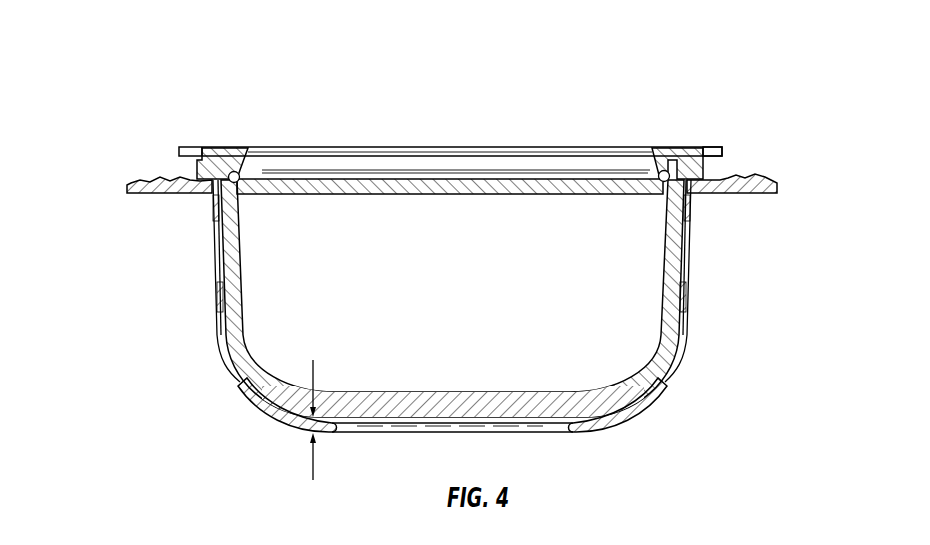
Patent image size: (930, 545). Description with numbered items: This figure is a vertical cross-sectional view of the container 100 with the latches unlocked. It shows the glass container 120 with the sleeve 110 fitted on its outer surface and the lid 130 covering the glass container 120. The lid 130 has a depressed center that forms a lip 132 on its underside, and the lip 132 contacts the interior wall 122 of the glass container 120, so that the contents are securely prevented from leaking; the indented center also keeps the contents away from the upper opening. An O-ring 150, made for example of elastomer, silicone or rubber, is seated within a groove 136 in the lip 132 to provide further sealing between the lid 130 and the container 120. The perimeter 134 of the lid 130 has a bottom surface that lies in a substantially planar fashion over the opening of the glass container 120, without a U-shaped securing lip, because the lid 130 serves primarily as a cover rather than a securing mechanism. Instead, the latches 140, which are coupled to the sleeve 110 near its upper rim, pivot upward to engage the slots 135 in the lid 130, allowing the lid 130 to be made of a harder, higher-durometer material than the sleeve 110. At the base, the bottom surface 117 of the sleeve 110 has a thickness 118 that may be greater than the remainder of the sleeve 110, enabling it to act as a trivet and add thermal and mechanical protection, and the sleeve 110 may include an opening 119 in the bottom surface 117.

The container 100 is at (186, 70).
The sleeve 110 is at (255, 402).
The bottom surface 117 is at (272, 415).
The thickness 118 is at (312, 430).
The opening 119 is at (387, 433).
The glass container 120 is at (604, 400).
The interior wall 122 is at (668, 260).
The lid 130 is at (458, 100).
The lip 132 is at (645, 177).
The perimeter 134 is at (450, 88).
The slots 135 is at (706, 150).
The groove 136 is at (656, 162).
The latches 140 is at (125, 184).
The O-ring 150 is at (252, 174).